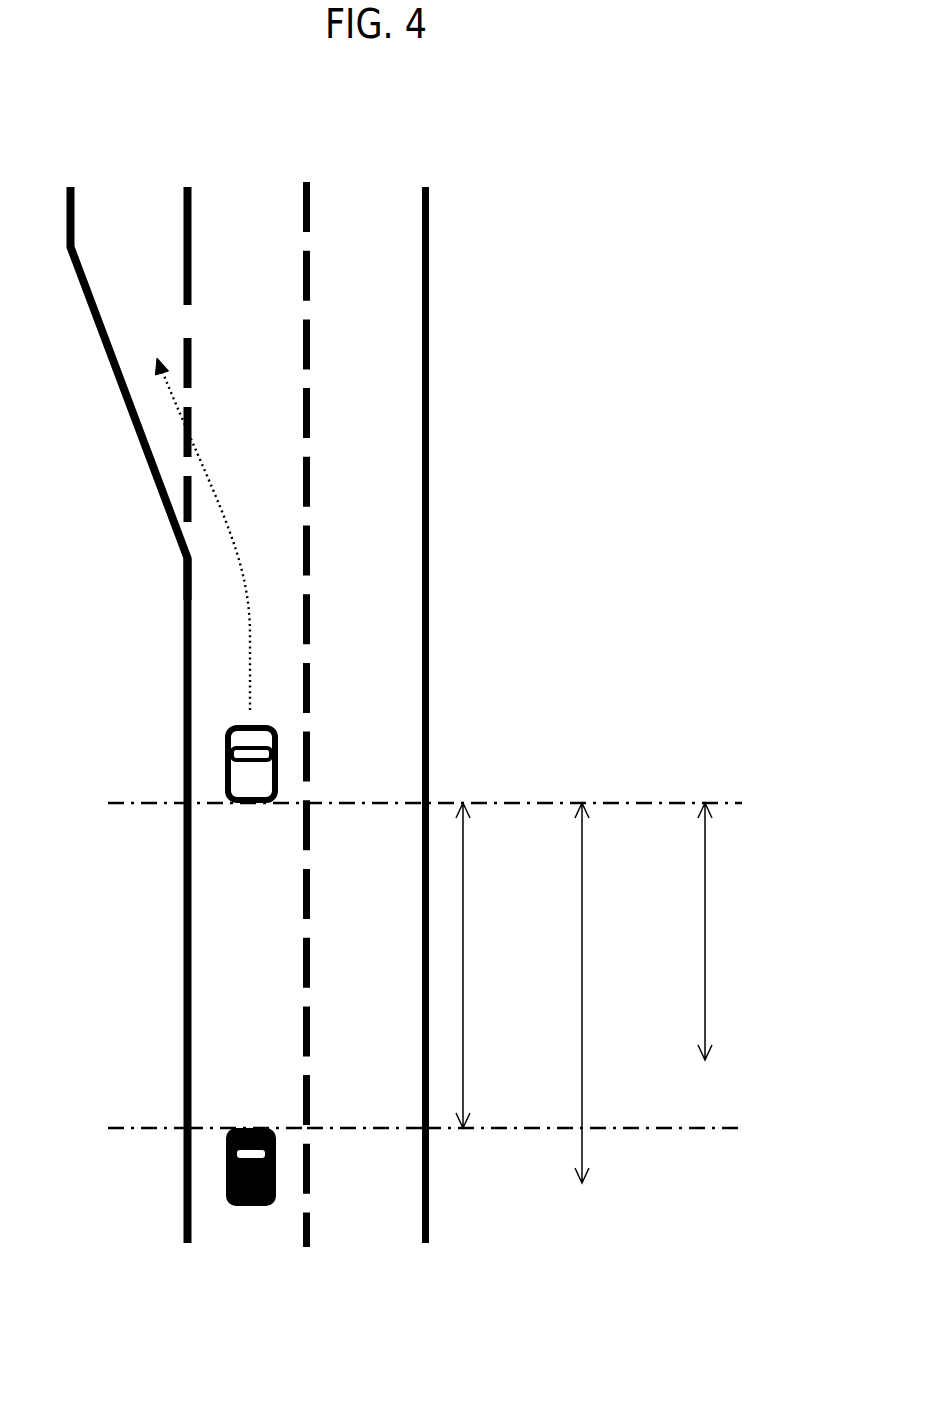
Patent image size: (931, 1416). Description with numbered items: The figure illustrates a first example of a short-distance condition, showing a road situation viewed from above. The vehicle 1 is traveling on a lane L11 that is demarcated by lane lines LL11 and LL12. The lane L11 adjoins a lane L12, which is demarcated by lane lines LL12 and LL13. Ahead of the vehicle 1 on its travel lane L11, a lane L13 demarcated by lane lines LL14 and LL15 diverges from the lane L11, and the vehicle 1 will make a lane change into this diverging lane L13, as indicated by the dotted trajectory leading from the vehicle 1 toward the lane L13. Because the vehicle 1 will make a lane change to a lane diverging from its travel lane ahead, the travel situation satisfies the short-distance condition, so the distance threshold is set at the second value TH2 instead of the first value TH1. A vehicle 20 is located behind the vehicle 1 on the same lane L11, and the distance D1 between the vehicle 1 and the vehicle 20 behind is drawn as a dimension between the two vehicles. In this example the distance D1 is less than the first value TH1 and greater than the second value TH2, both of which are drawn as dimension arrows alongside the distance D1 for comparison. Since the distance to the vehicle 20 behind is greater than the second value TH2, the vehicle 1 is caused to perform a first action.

The vehicle 1 is at (226, 765).
The vehicle behind 20 is at (226, 1168).
The lane L11 is at (255, 1243).
The lane L12 is at (372, 1243).
The lane L13 is at (123, 183).
The lane line LL11 is at (188, 1243).
The lane line LL12 is at (307, 1247).
The lane line LL13 is at (425, 1243).
The lane line LL14 is at (72, 187).
The lane line LL15 is at (187, 187).
The distance D1 is at (463, 1007).
The first value TH1 is at (582, 1000).
The second value TH2 is at (705, 1000).